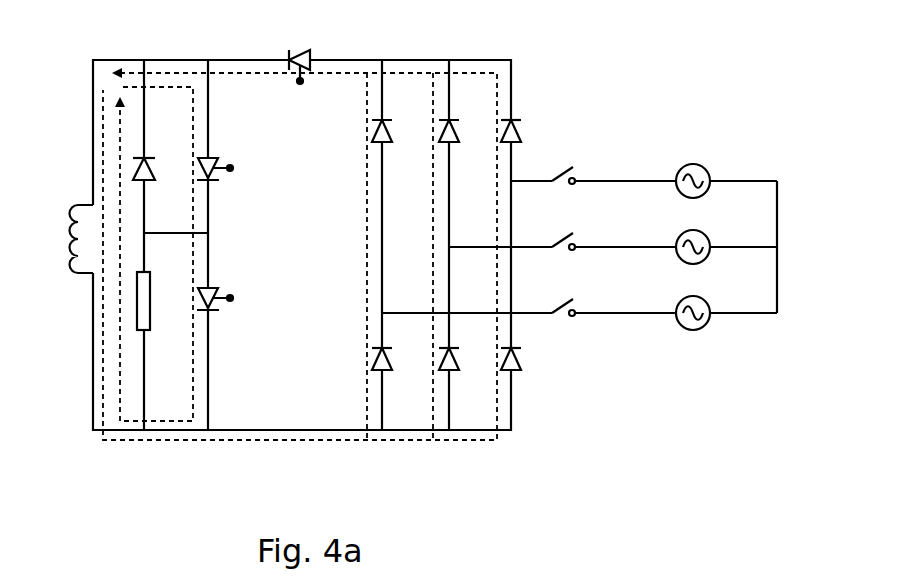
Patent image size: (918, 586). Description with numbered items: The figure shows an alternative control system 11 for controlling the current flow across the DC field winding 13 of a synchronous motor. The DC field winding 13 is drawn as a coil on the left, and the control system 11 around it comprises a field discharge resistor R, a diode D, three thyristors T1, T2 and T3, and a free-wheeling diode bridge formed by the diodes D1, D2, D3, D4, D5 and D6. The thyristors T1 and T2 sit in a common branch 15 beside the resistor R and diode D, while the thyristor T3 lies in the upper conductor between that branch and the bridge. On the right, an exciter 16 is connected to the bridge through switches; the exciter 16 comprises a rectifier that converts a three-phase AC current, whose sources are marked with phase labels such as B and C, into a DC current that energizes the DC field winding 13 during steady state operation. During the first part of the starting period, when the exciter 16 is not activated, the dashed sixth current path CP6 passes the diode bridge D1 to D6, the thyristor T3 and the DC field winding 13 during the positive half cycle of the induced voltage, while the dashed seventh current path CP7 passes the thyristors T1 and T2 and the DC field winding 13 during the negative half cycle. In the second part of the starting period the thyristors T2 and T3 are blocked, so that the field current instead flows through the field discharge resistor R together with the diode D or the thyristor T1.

The control system 11 is at (473, 480).
The DC field winding 13 is at (67, 278).
The thyristor branch 15 is at (237, 245).
The exciter 16 is at (581, 225).
The sixth current path CP6 is at (487, 442).
The seventh current path CP7 is at (241, 123).
The diode D is at (139, 166).
The field discharge resistor R is at (151, 338).
The thyristor T1 is at (222, 178).
The thyristor T2 is at (222, 309).
The thyristor T3 is at (295, 54).
The diode of free-wheeling diode bridge D1 is at (362, 245).
The diode of free-wheeling diode bridge D2 is at (428, 245).
The diode of free-wheeling diode bridge D3 is at (491, 128).
The diode of free-wheeling diode bridge D4 is at (362, 361).
The diode of free-wheeling diode bridge D5 is at (428, 361).
The diode of free-wheeling diode bridge D6 is at (491, 361).
The phase B source B is at (613, 235).
The phase C source C is at (579, 301).